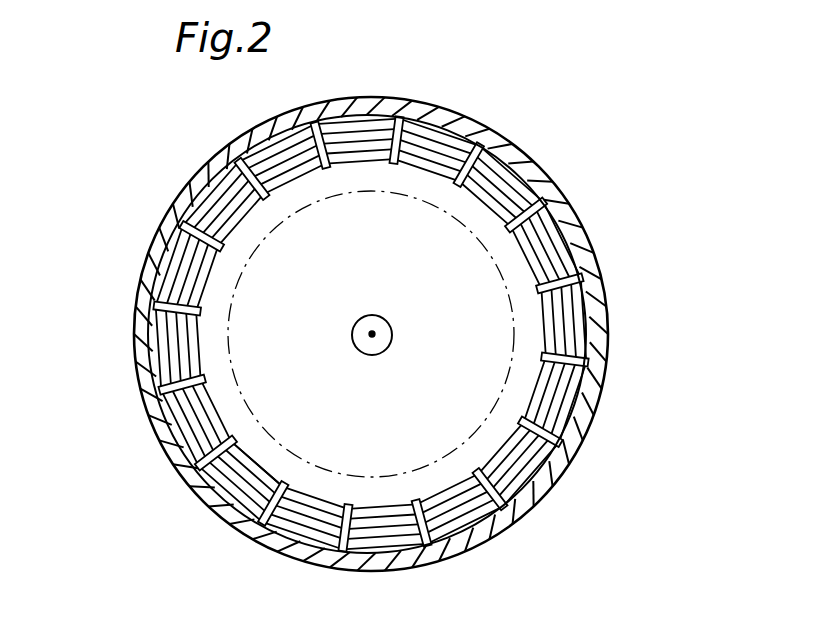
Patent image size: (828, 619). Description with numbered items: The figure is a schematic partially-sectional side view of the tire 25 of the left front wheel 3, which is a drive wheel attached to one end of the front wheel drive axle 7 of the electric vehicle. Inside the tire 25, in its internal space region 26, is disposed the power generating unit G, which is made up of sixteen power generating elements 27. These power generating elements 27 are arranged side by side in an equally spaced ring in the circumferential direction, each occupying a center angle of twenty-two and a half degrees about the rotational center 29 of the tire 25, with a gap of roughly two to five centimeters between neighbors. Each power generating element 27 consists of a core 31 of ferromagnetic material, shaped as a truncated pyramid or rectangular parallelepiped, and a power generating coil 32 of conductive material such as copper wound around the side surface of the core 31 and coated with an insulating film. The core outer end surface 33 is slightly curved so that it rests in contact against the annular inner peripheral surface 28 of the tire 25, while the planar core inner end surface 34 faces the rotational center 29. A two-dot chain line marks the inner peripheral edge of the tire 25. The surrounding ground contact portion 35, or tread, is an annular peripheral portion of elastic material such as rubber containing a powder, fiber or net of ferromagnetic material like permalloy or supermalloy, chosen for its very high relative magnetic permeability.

The left front wheel 3 is at (642, 193).
The front wheel drive axle 7 is at (392, 327).
The tire 25 is at (615, 367).
The internal space region 26 is at (525, 312).
The power generating element 27 is at (175, 353).
The inner peripheral surface 28 is at (200, 450).
The rotational center 29 is at (372, 334).
The core 31 is at (250, 467).
The power generating coil 32 is at (263, 470).
The core outer end surface 33 is at (147, 255).
The core inner end surface 34 is at (208, 272).
The ground contact portion 35 is at (228, 153).
The power generating unit G is at (465, 470).